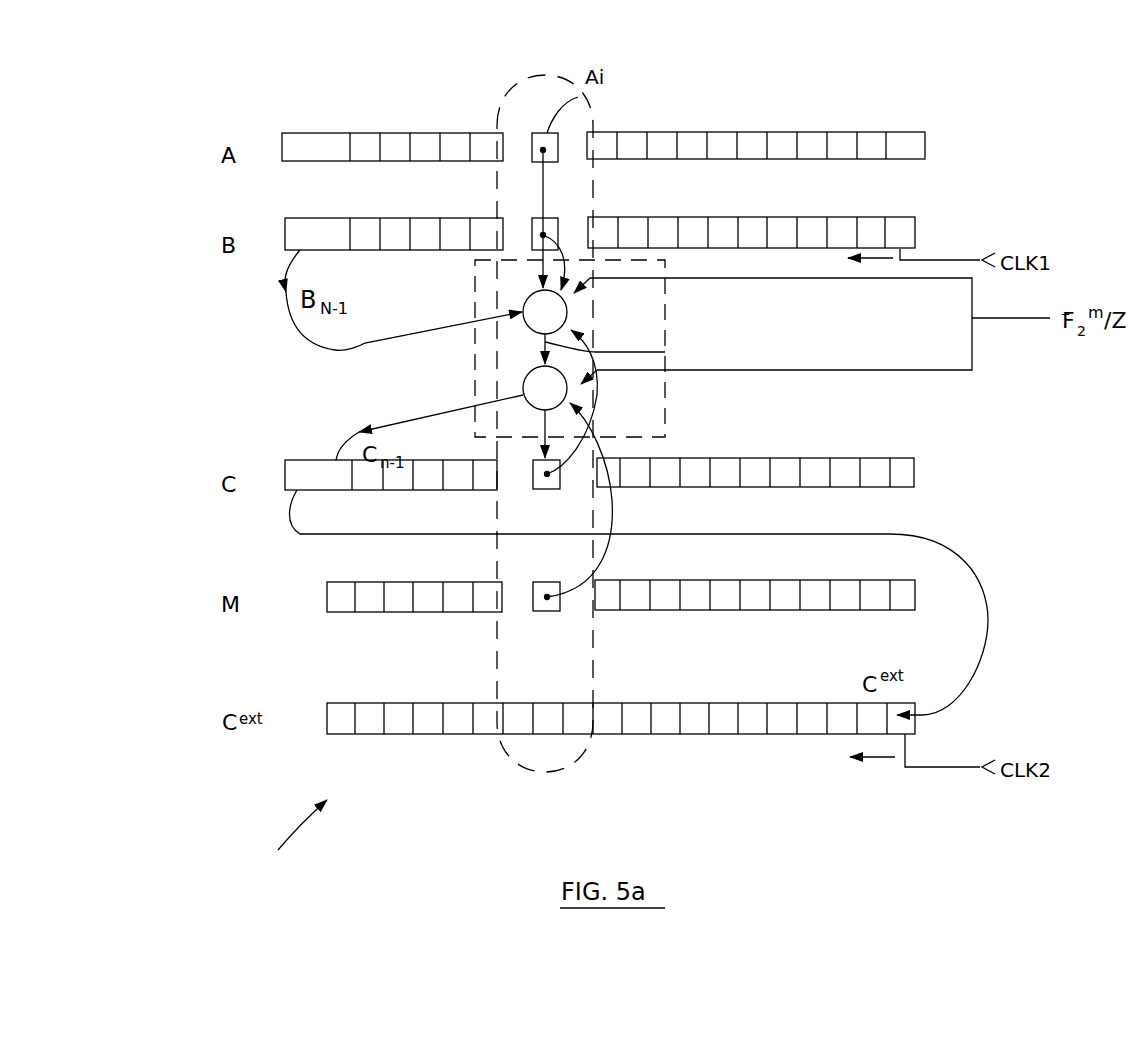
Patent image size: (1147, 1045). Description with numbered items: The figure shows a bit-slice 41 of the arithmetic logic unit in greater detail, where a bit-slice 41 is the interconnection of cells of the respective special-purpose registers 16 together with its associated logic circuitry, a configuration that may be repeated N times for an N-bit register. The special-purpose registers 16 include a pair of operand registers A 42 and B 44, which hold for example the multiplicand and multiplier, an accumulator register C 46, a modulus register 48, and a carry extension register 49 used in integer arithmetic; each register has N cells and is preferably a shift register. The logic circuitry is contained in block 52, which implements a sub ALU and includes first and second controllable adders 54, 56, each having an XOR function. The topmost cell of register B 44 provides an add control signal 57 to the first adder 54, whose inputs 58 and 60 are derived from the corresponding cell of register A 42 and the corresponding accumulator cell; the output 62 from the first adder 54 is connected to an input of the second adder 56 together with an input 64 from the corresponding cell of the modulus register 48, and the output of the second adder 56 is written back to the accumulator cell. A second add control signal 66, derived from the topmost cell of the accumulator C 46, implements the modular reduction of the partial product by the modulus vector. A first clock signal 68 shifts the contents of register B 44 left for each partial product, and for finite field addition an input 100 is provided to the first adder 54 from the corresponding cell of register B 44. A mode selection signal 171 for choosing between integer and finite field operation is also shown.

The special-purpose registers 16 is at (297, 842).
The bit-slice 41 is at (521, 748).
The operand register A 42 is at (925, 131).
The operand register B 44 is at (915, 216).
The accumulator register C 46 is at (908, 469).
The modulus register 48 is at (905, 600).
The carry extension register C^ext 49 is at (815, 733).
The block of circuitry 52 is at (475, 350).
The first controllable adder 54 is at (525, 299).
The second controllable adder 56 is at (523, 386).
The add control signal b_n-1 57 is at (291, 268).
The input from register cell A_i 58 is at (543, 268).
The input from accumulator cell C_i 60 is at (594, 340).
The output of first adder 62 is at (665, 352).
The input from modulus register cell M_i 64 is at (614, 515).
The second add control signal 66 is at (341, 453).
The clock signal CLK1 68 is at (930, 260).
The input from cell B_i 100 is at (667, 278).
The mode selection signal Z F_2m 171 is at (1005, 320).